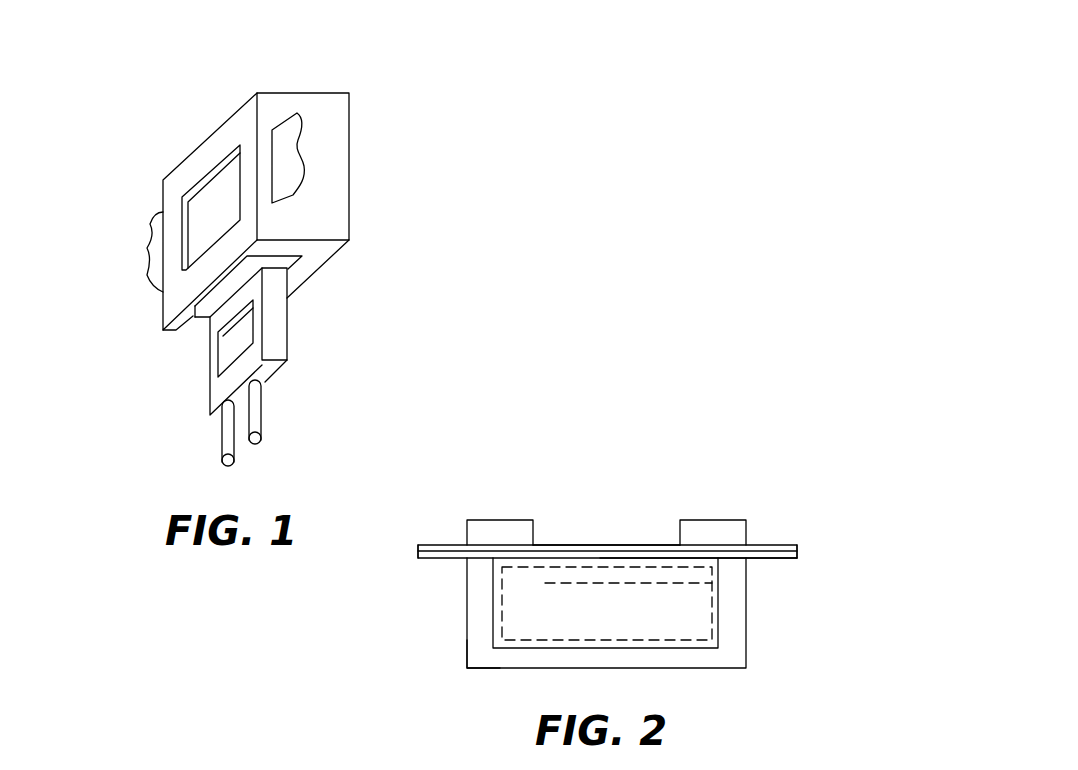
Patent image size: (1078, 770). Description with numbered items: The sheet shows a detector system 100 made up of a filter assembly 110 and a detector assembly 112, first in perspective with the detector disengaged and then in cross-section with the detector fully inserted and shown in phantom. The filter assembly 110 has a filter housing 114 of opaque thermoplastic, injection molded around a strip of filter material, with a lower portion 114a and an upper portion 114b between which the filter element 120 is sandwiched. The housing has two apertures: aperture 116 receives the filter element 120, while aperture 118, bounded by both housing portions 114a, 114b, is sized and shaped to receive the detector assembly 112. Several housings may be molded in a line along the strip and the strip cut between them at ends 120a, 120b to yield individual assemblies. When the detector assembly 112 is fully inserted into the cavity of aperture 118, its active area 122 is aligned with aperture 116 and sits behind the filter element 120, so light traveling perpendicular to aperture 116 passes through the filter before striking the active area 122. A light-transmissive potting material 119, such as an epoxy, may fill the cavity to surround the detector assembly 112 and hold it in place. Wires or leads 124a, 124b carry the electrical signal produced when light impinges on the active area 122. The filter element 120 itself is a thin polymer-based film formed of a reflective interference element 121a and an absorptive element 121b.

In FIG. 1, the detector system 100 is at (402, 116).
In FIG. 1, the filter assembly 110 is at (318, 90).
In FIG. 1, the detector assembly 112 is at (294, 325).
In FIG. 2, the detector assembly 112 is at (707, 648).
In FIG. 1, the filter housing 114 is at (343, 217).
In FIG. 2, the filter housing 114 is at (746, 615).
In FIG. 2, the lower portion of filter housing 114a is at (467, 653).
In FIG. 2, the upper portion of filter housing 114b is at (484, 520).
In FIG. 1, the aperture 116 is at (203, 179).
In FIG. 2, the aperture 116 is at (640, 521).
In FIG. 1, the aperture 118 is at (300, 262).
In FIG. 1, the light-transmissive potting material 119 is at (194, 318).
In FIG. 1, the filter element 120 is at (203, 213).
In FIG. 2, the filter element 120 is at (815, 548).
In FIG. 1, the end of filter element 120a is at (150, 281).
In FIG. 2, the end of filter element 120a is at (417, 549).
In FIG. 1, the end of filter element 120b is at (297, 147).
In FIG. 2, the end of filter element 120b is at (800, 546).
In FIG. 2, the reflective interference element 121a is at (760, 559).
In FIG. 2, the absorptive element 121b is at (758, 545).
In FIG. 1, the active area 122 is at (232, 344).
In FIG. 2, the active area 122 is at (543, 586).
In FIG. 1, the wire or lead 124a is at (226, 462).
In FIG. 1, the wire or lead 124b is at (262, 438).